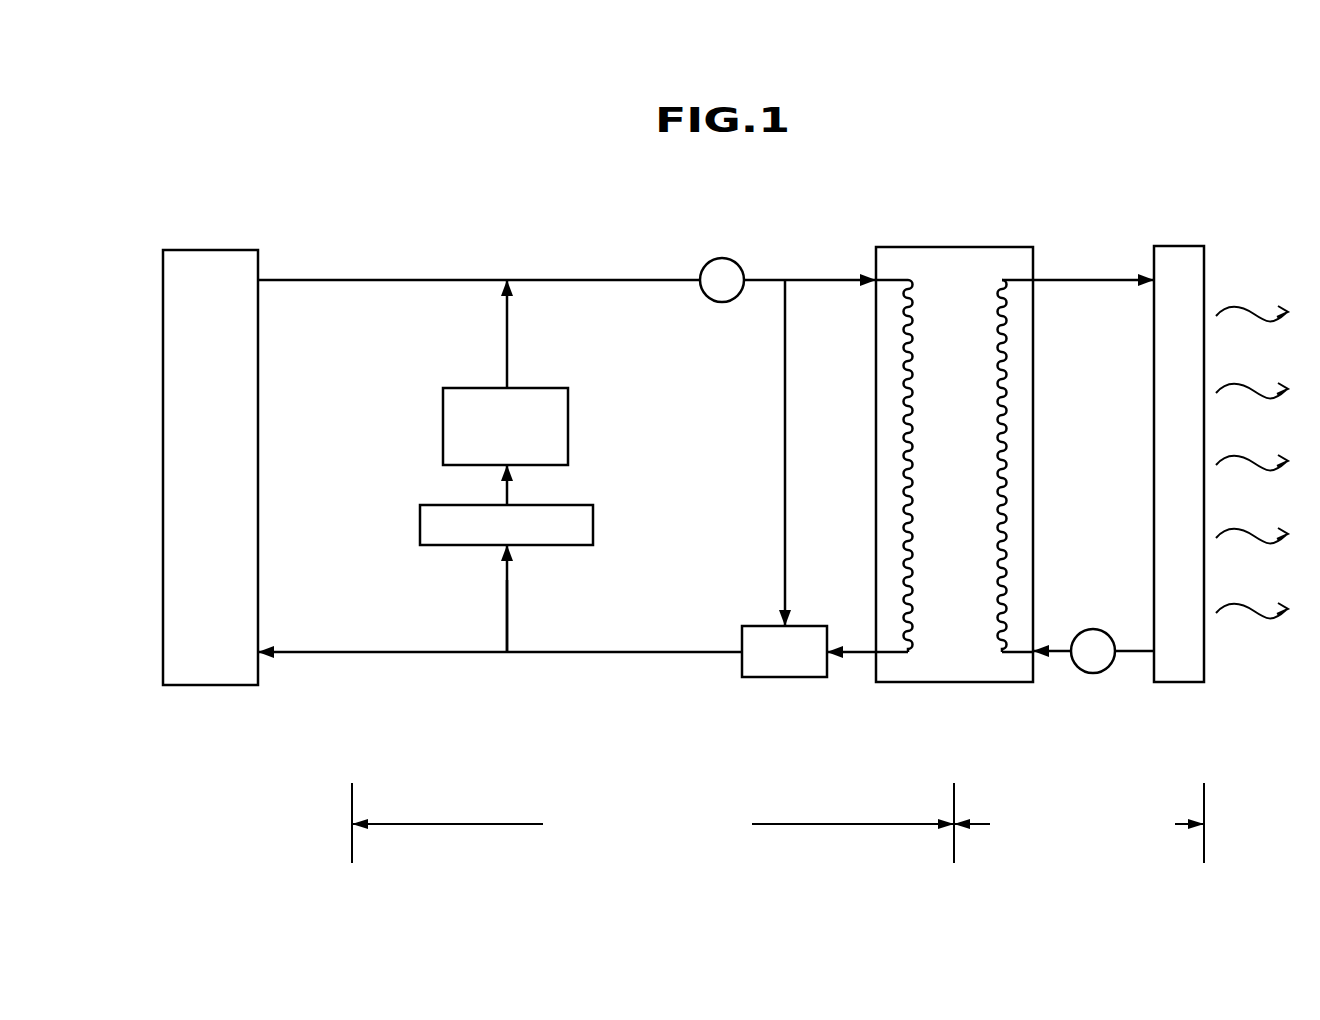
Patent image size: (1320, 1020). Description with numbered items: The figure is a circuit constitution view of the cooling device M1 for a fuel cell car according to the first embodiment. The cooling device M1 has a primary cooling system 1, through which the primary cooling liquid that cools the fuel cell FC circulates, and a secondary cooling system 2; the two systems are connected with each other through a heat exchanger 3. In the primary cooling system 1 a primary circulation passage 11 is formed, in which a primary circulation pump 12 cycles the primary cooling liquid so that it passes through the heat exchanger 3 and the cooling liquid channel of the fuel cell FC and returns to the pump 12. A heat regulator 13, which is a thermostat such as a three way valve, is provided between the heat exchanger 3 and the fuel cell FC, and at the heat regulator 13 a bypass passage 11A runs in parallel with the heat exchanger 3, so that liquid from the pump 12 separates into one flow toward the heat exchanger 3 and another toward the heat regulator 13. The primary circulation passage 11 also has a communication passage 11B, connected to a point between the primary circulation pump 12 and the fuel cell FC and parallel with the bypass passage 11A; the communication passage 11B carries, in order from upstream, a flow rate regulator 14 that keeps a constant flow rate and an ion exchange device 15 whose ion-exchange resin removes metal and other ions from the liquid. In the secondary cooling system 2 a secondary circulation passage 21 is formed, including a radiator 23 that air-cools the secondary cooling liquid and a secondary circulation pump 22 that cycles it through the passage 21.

The cooling device M1 is at (925, 119).
The fuel cell FC is at (232, 250).
The primary cooling system 1 is at (602, 700).
The secondary cooling system 2 is at (1088, 700).
The heat exchanger 3 is at (1008, 247).
The primary circulation passage 11 is at (563, 262).
The bypass passage 11A is at (785, 352).
The communication passage 11B is at (510, 600).
The primary circulation pump 12 is at (722, 258).
The heat regulator 13 is at (802, 626).
The flow rate regulator 14 is at (578, 505).
The ion exchange device 15 is at (548, 388).
The secondary circulation passage 21 is at (1088, 258).
The secondary circulation pump 22 is at (1093, 628).
The radiator 23 is at (1180, 246).